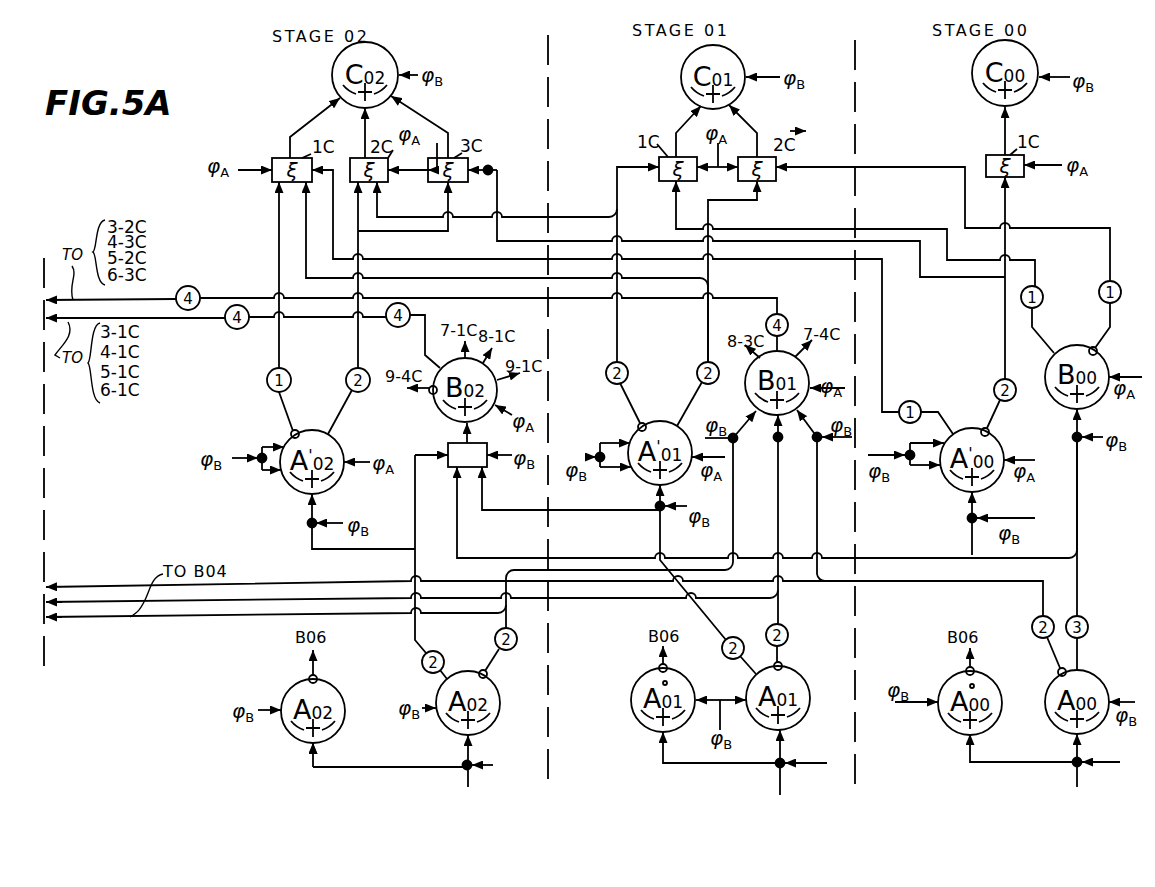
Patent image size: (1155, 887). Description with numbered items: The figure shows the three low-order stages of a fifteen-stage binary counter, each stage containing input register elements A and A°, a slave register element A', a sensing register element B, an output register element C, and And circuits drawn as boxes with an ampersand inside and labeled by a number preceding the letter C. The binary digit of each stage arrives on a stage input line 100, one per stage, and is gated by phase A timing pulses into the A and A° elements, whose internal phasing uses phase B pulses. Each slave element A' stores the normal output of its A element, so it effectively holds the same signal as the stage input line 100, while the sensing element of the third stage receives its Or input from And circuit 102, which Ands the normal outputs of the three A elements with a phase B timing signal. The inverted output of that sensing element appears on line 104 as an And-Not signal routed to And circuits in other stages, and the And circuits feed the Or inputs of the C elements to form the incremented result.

The stage input line 100 is at (462, 775).
The And circuit 102 is at (448, 445).
The inverted output line 104 is at (431, 394).